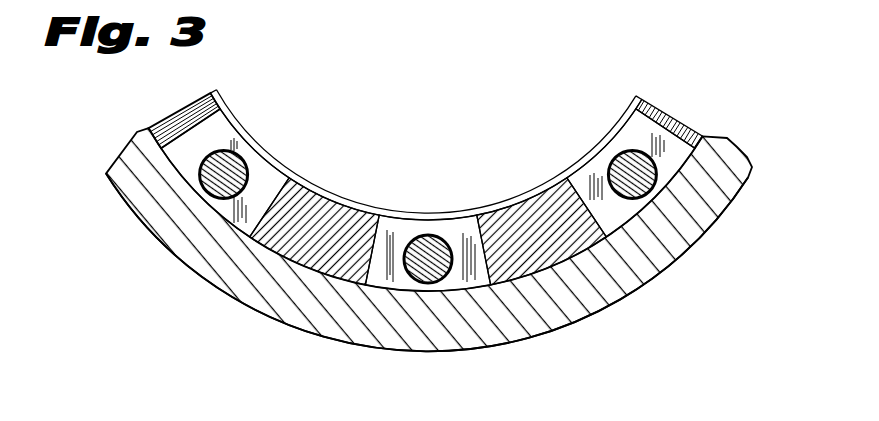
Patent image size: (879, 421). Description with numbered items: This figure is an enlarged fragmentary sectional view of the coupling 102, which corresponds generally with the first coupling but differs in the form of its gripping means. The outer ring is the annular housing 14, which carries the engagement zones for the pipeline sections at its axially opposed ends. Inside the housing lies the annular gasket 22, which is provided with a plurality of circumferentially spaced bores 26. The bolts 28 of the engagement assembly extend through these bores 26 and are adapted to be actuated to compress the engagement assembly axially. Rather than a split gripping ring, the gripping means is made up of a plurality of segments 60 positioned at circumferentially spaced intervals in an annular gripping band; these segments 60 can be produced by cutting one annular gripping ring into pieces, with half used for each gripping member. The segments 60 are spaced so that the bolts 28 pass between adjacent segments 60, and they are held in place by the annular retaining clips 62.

The coupling 102 is at (671, 267).
The annular housing 14 is at (618, 300).
The annular retaining clips 62 is at (240, 134).
The segments 60 is at (332, 199).
The annular gasket 22 is at (672, 143).
The bolts 28 is at (245, 176).
The bores 26 is at (241, 158).